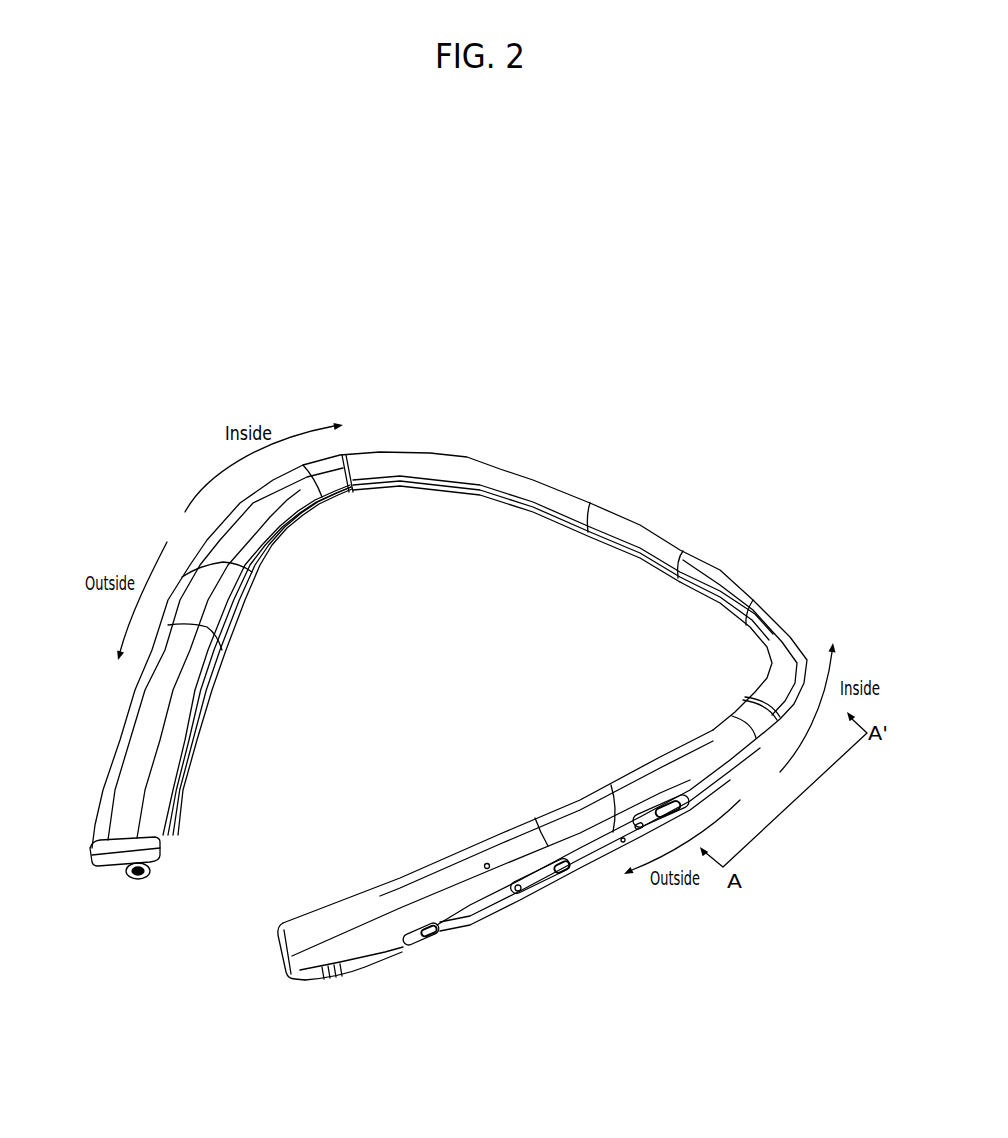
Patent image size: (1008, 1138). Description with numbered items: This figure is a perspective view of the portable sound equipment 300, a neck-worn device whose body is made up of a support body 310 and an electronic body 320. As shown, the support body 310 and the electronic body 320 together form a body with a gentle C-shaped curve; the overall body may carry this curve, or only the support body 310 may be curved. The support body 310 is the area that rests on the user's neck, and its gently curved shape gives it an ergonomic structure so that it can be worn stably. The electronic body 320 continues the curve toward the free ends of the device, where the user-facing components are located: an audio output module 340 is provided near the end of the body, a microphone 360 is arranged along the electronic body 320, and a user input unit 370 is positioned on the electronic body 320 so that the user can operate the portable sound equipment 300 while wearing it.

The portable sound equipment 300 is at (215, 401).
The support body 310 is at (788, 575).
The electronic body 320 is at (597, 778).
The audio output module 340 is at (328, 982).
The microphone 360 is at (489, 869).
The user input unit 370 is at (593, 863).